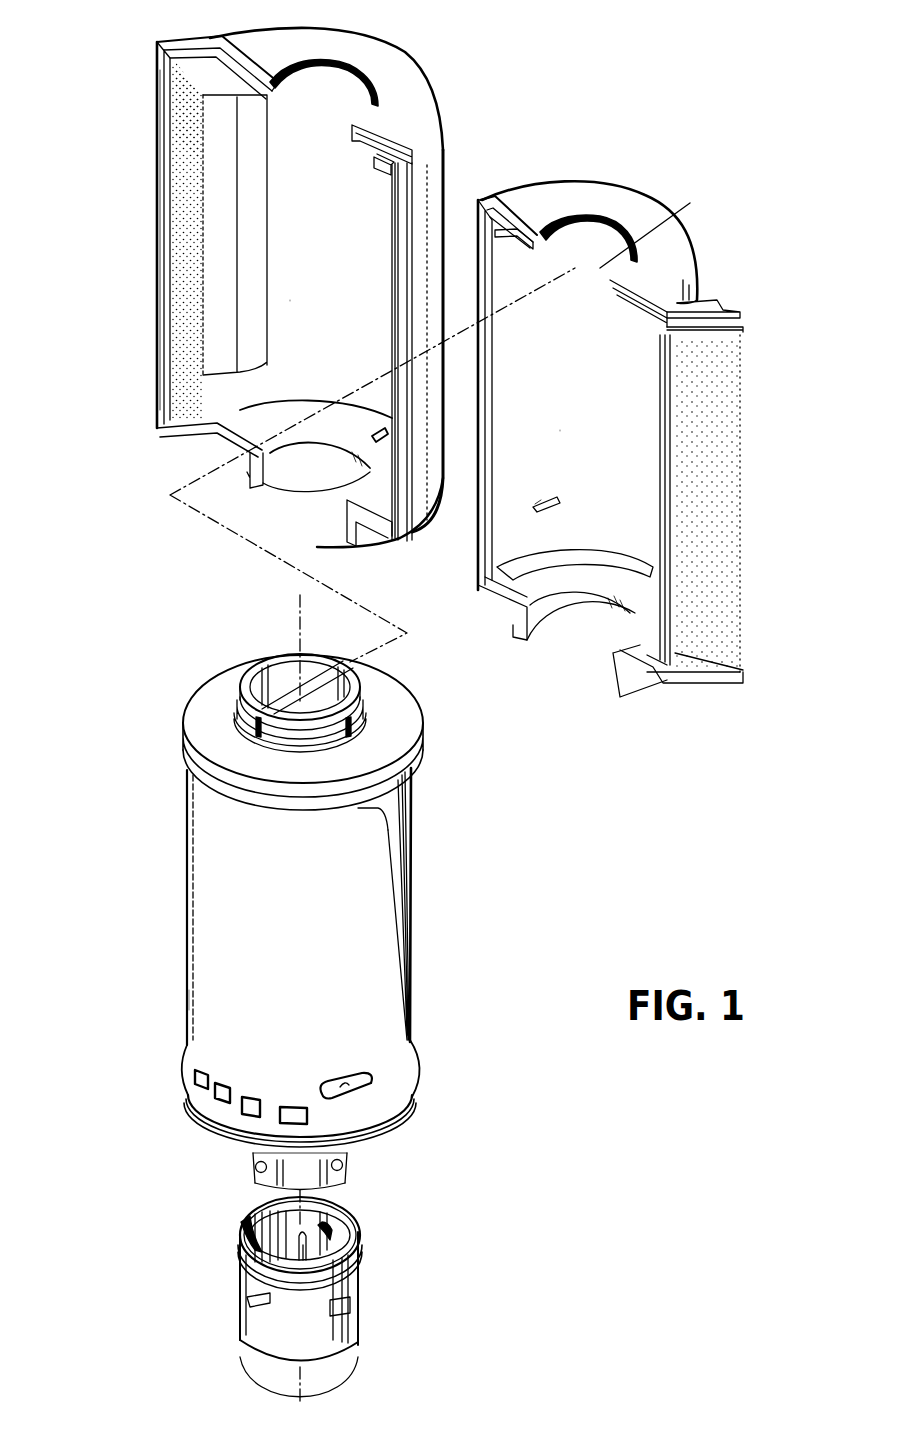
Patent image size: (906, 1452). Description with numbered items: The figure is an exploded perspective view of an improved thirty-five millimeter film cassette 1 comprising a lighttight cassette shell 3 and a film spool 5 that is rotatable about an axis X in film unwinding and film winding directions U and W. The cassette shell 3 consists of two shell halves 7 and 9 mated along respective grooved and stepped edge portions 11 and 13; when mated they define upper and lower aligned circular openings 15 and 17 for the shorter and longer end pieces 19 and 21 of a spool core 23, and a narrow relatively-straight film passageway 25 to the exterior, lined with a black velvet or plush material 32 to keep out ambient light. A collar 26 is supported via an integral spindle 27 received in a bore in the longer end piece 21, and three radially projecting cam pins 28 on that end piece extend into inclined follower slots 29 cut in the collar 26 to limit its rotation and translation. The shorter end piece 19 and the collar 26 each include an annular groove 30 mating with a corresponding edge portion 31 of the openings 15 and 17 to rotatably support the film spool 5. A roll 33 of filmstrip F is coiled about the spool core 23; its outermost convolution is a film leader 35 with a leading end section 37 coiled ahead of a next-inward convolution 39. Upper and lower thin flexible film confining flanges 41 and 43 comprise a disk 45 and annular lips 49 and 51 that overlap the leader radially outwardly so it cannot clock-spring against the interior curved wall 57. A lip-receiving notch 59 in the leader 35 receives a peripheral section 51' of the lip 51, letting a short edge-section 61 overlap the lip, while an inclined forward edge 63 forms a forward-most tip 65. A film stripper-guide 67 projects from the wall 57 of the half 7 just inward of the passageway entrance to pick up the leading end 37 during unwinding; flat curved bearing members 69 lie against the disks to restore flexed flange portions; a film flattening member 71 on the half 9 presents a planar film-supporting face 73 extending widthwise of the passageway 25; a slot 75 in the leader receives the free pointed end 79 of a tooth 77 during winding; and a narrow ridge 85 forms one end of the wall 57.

The film cassette 1 is at (198, 12).
The cassette shell 3 is at (461, 312).
The film spool 5 is at (274, 940).
The shell half 7 is at (610, 426).
The shell half 9 is at (344, 282).
The grooved and stepped edge portion 11 is at (475, 570).
The grooved and stepped edge portion 13 is at (342, 547).
The upper circular opening 15 is at (304, 64).
The lower circular opening 17 is at (290, 460).
The shorter end piece 19 is at (358, 663).
The longer end piece 21 is at (256, 1172).
The spool core 23 is at (227, 655).
The film passageway 25 is at (165, 276).
The collar 26 is at (313, 1297).
The spindle 27 is at (290, 1212).
The cam pins 28 is at (258, 1172).
The inclined follower slots 29 is at (296, 1275).
The annular groove 30 is at (348, 740).
The edge portion 31 is at (343, 81).
The black velvet or plush material 32 is at (168, 107).
The film roll 33 is at (108, 972).
The film leader 35 is at (190, 818).
The leading end section 37 is at (380, 874).
The next-inward convolution 39 is at (401, 822).
The upper film confining flange 41 is at (231, 728).
The lower film confining flange 43 is at (258, 1163).
The disk 45 is at (208, 708).
The annular lip 49 is at (233, 761).
The annular lip 51 is at (232, 1129).
The peripheral section of annular lip 51' is at (339, 1146).
The interior curved wall 57 is at (332, 303).
The lip-receiving notch 59 is at (332, 1128).
The edge-section 61 is at (397, 1128).
The forward edge 63 is at (398, 944).
The forward-most tip 65 is at (408, 1125).
The film stripper-guide 67 is at (645, 655).
The bearing members 69 is at (380, 170).
The film flattening member 71 is at (230, 96).
The film-supporting face 73 is at (225, 167).
The slot 75 is at (343, 1082).
The tooth 77 is at (556, 495).
The free pointed end 79 is at (538, 507).
The narrow ridge 85 is at (665, 382).
The filmstrip F is at (190, 1000).
The film winding direction W is at (236, 1357).
The film unwinding direction U is at (393, 1348).
The axis X is at (305, 620).